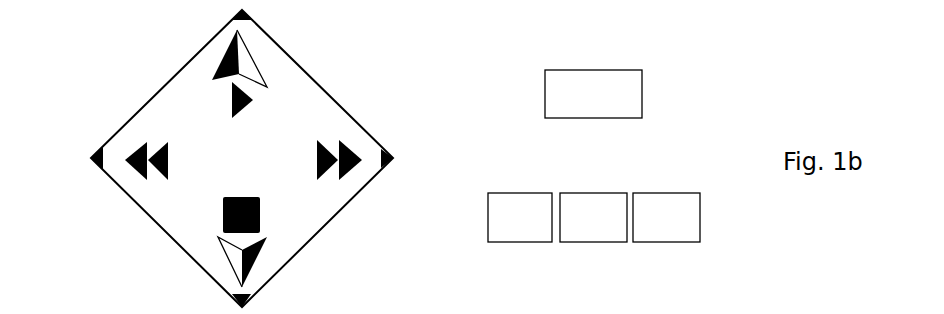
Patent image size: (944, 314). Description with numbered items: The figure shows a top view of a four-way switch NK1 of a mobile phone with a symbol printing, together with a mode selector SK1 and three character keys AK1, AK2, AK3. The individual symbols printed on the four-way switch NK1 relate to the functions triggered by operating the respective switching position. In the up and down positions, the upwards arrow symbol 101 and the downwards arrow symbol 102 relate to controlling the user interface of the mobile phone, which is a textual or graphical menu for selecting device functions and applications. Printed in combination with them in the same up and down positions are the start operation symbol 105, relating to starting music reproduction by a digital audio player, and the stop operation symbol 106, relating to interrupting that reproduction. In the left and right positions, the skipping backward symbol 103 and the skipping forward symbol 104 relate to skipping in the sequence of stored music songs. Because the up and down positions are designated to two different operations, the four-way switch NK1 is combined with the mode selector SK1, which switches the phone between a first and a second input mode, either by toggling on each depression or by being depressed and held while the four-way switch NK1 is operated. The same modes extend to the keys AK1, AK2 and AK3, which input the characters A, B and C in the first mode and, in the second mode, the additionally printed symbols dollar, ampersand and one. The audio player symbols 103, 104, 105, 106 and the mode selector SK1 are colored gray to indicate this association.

The four-way switch NK1 is at (327, 79).
The upwards arrow symbol 101 is at (201, 54).
The downwards arrow symbol 102 is at (202, 266).
The skipping backward symbol 103 is at (117, 141).
The skipping forward symbol 104 is at (370, 141).
The start operation symbol 105 is at (183, 90).
The stop operation symbol 106 is at (182, 228).
The mode selector SK1 is at (598, 63).
The key AK1 is at (523, 251).
The key AK2 is at (599, 185).
The key AK3 is at (671, 249).